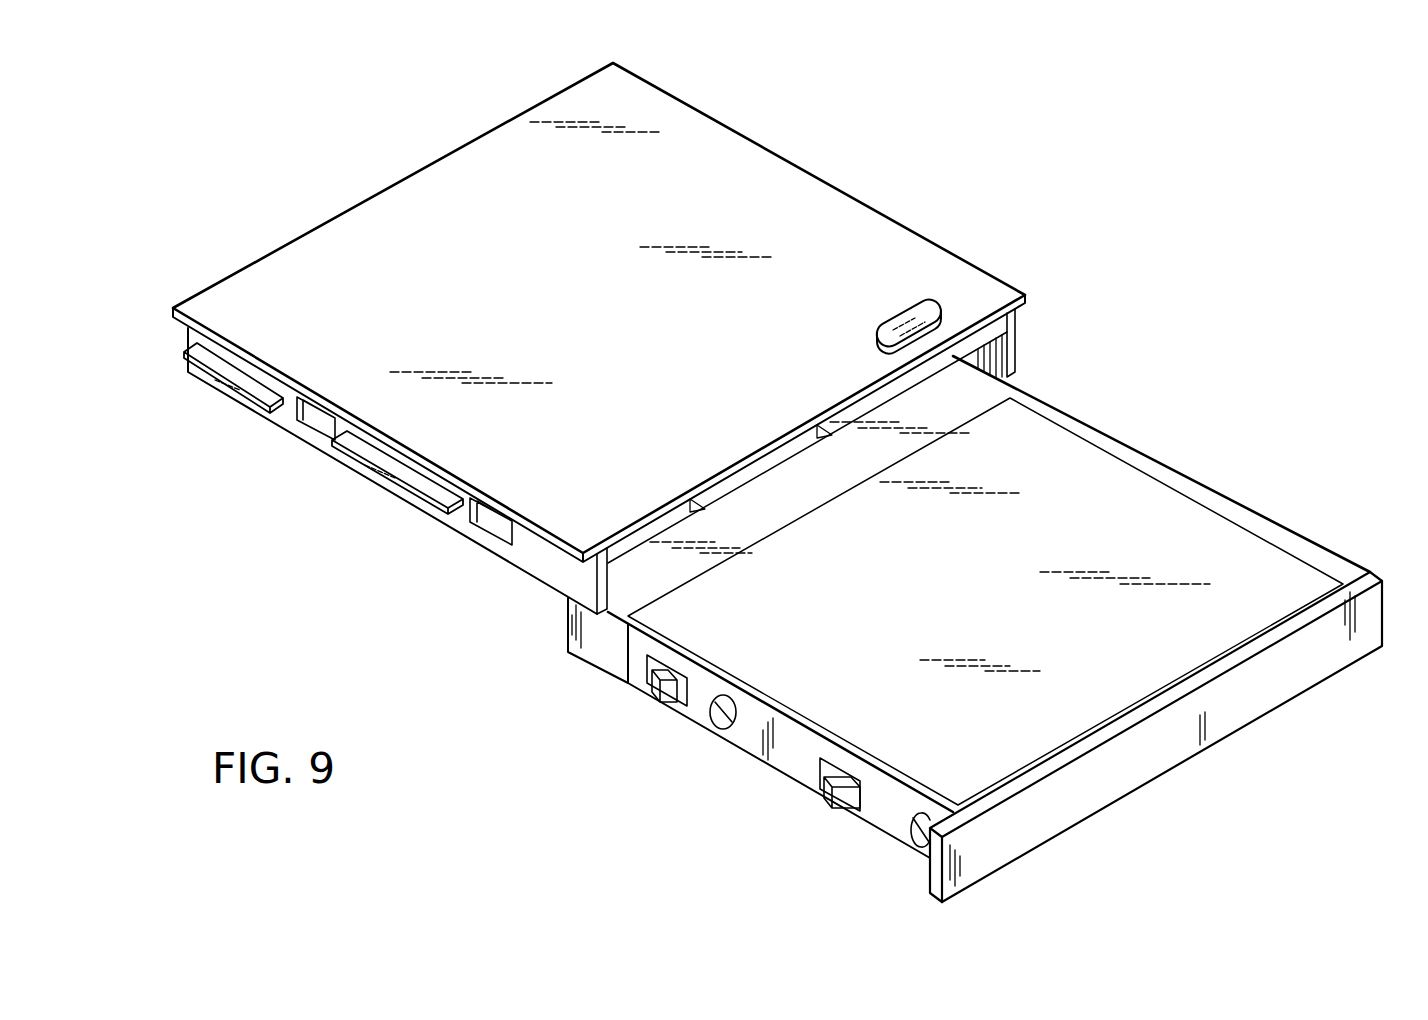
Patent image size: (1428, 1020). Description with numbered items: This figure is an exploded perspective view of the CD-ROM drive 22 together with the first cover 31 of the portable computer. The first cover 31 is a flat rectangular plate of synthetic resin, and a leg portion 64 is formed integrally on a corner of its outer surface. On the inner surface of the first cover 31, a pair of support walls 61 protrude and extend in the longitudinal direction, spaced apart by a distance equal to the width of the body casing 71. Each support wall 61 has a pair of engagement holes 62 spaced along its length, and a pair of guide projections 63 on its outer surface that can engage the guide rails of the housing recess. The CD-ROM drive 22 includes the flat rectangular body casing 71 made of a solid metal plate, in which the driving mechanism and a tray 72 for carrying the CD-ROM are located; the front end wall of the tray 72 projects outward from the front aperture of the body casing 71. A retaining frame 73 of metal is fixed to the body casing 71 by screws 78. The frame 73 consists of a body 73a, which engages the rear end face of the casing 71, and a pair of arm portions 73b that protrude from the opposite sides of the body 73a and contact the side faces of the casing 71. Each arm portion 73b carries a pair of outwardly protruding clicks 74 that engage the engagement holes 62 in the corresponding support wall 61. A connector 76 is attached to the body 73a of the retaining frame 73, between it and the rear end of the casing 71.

The first cover 31 is at (752, 178).
The leg portion 64 is at (905, 316).
The support wall 61 is at (540, 570).
The guide projection 63 is at (222, 385).
The engagement hole 62 is at (310, 430).
The connector 76 is at (748, 472).
The CD-ROM drive 22 is at (1053, 481).
The retaining frame 73 is at (601, 649).
The arm portion 73b is at (1282, 548).
The body casing 71 is at (1159, 523).
The body 73a is at (803, 512).
The click 74 is at (675, 712).
The screw 78 is at (718, 738).
The tray 72 is at (1338, 656).